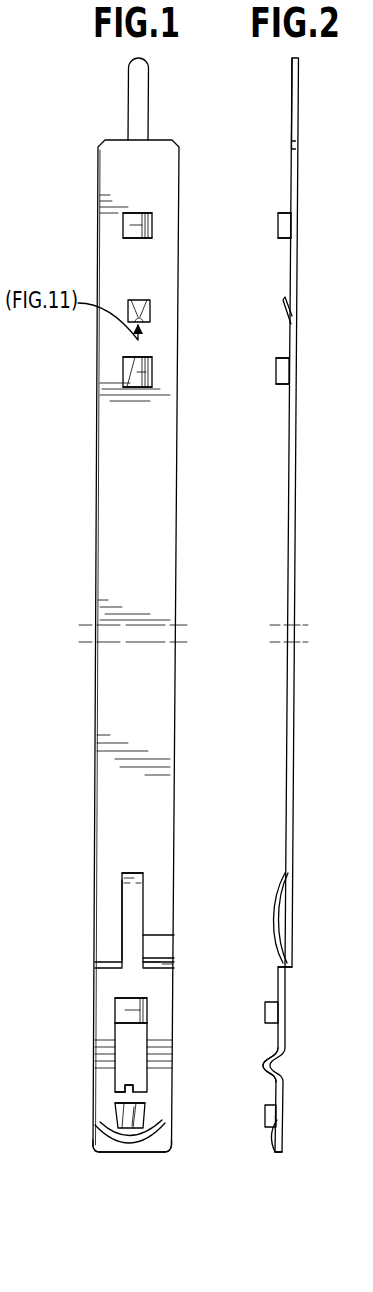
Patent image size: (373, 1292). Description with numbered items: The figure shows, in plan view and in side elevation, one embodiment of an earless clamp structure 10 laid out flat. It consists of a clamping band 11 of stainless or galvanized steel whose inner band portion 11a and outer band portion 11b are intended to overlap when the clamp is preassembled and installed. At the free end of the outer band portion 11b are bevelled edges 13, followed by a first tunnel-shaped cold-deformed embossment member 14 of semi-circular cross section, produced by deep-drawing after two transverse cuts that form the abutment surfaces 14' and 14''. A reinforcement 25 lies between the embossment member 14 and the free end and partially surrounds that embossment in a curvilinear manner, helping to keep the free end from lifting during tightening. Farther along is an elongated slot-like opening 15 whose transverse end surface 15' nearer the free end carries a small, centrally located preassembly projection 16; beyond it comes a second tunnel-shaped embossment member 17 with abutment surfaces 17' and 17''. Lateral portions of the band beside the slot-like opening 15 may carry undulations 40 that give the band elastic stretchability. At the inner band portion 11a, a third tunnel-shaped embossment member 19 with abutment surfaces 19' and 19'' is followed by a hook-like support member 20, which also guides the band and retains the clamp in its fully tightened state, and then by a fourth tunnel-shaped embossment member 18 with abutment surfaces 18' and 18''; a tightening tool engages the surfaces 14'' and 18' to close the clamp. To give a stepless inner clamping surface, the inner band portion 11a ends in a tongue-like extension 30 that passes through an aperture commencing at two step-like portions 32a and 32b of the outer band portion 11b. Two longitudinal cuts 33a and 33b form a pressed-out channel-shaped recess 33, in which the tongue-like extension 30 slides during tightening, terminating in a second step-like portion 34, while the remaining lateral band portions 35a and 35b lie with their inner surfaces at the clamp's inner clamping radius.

In FIG. 1, the clamp structure 10 is at (88, 457).
In FIG. 1, the clamping band 11 is at (112, 553).
In FIG. 2, the clamping band 11 is at (293, 600).
In FIG. 1, the inner band portion 11a is at (153, 268).
In FIG. 1, the outer band portion 11b is at (163, 1025).
In FIG. 1, the bevelled edges 13 is at (163, 1153).
In FIG. 1, the first tunnel-shaped cold-deformed embossment member 14 is at (83, 1115).
In FIG. 2, the first tunnel-shaped cold-deformed embossment member 14 is at (254, 1108).
In FIG. 1, the abutment surface 14' is at (93, 1141).
In FIG. 2, the abutment surface 14' is at (274, 1136).
In FIG. 1, the abutment surface 14'' is at (166, 1114).
In FIG. 1, the elongated slot-like opening 15 is at (73, 1055).
In FIG. 1, the transverse end surface 15' is at (76, 1086).
In FIG. 1, the preassembly projection 16 is at (140, 1081).
In FIG. 1, the second cold-deformed tunnel-shaped embossment member 17 is at (160, 1011).
In FIG. 2, the second cold-deformed tunnel-shaped embossment member 17 is at (252, 1022).
In FIG. 1, the abutment surface 17' is at (92, 1007).
In FIG. 1, the abutment surface 17'' is at (92, 1030).
In FIG. 1, the fourth tunnel-shaped cold-deformed embossment member 18 is at (166, 372).
In FIG. 2, the fourth tunnel-shaped cold-deformed embossment member 18 is at (262, 378).
In FIG. 1, the abutment surface 18' is at (168, 408).
In FIG. 2, the abutment surface 18' is at (264, 414).
In FIG. 1, the abutment surface 18'' is at (103, 343).
In FIG. 2, the abutment surface 18'' is at (262, 352).
In FIG. 1, the third tunnel-shaped cold-deformed embossment member 19 is at (168, 211).
In FIG. 2, the third tunnel-shaped cold-deformed embossment member 19 is at (264, 229).
In FIG. 1, the abutment surface 19' is at (102, 198).
In FIG. 2, the abutment surface 19' is at (268, 194).
In FIG. 1, the abutment surface 19'' is at (103, 244).
In FIG. 2, the abutment surface 19'' is at (264, 263).
In FIG. 1, the hook-like support member 20 is at (152, 311).
In FIG. 2, the hook-like support member 20 is at (283, 320).
In FIG. 1, the reinforcement 25 is at (132, 1154).
In FIG. 2, the reinforcement 25 is at (272, 1153).
In FIG. 1, the tongue-like extension 30 is at (145, 98).
In FIG. 2, the tongue-like extension 30 is at (298, 98).
In FIG. 1, the step-like portion 32a is at (107, 958).
In FIG. 1, the step-like portion 32b is at (152, 970).
In FIG. 2, the step-like portion 32b is at (287, 968).
In FIG. 1, the pressed-out channel-shaped recess 33 is at (133, 920).
In FIG. 2, the pressed-out channel-shaped recess 33 is at (275, 913).
In FIG. 1, the longitudinal cut 33a is at (122, 897).
In FIG. 1, the longitudinal cut 33b is at (145, 935).
In FIG. 1, the second step-like portion 34 is at (137, 871).
In FIG. 1, the lateral band portion 35a is at (103, 918).
In FIG. 1, the lateral band portion 35b is at (158, 897).
In FIG. 2, the lateral band portion 35b is at (288, 915).
In FIG. 1, the undulation 40 is at (92, 1062).
In FIG. 2, the undulation 40 is at (257, 1063).